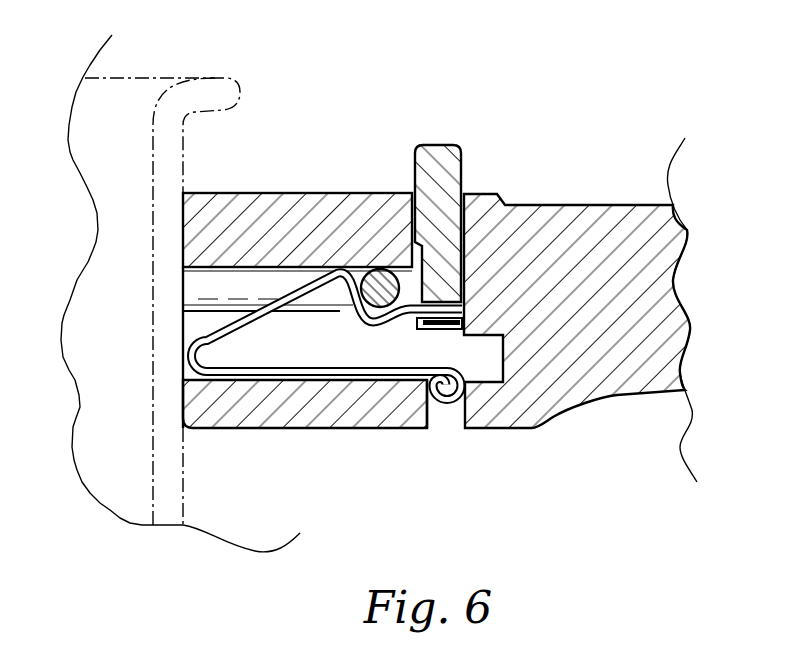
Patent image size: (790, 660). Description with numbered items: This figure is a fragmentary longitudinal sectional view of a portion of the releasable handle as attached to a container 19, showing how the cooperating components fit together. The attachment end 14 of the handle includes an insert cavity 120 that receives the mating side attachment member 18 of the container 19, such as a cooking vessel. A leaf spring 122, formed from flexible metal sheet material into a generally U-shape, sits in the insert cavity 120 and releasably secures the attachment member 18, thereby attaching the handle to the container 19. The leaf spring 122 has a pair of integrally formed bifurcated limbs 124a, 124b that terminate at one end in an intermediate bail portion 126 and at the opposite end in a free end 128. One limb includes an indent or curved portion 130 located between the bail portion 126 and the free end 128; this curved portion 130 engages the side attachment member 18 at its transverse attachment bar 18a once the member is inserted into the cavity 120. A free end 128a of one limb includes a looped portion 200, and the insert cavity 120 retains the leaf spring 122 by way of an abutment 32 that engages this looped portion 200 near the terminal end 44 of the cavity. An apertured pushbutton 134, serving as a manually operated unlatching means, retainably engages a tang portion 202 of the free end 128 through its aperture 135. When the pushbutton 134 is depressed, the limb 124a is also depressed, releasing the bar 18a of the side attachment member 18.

The attachment end 14 is at (212, 228).
The side attachment member 18 is at (252, 280).
The transverse attachment bar 18a is at (382, 283).
The container 19 is at (131, 100).
The abutment 32 is at (430, 410).
The terminal end 44 is at (503, 352).
The insert cavity 120 is at (208, 287).
The leaf spring 122 is at (265, 378).
The bifurcated limb 124a is at (418, 327).
The bifurcated limb 124b is at (380, 376).
The intermediate bail portion 126 is at (193, 355).
The free end 128 is at (438, 332).
The free end 128a is at (468, 368).
The indent or curved portion 130 is at (322, 340).
The apertured pushbutton 134 is at (431, 160).
The aperture 135 is at (515, 287).
The looped portion 200 is at (462, 392).
The tang portion 202 is at (467, 305).